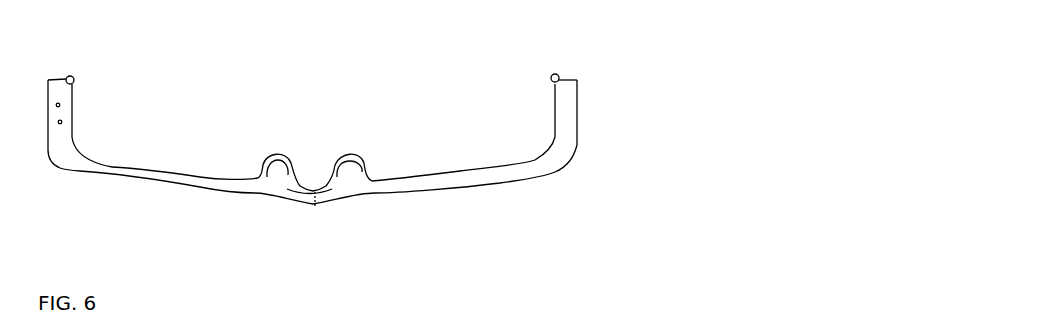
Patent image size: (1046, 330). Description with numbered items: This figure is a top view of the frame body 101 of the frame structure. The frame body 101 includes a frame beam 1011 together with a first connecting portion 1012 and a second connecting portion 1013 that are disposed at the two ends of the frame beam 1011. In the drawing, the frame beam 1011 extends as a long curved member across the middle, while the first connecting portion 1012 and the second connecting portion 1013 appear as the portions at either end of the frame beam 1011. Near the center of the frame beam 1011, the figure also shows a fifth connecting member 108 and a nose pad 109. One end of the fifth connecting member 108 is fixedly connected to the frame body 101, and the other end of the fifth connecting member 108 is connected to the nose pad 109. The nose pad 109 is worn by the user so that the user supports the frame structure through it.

The frame body 101 is at (290, 78).
The frame beam 1011 is at (195, 188).
The first connecting portion 1012 is at (65, 113).
The second connecting portion 1013 is at (562, 110).
The fifth connecting member 108 is at (335, 173).
The nose pad 109 is at (278, 174).